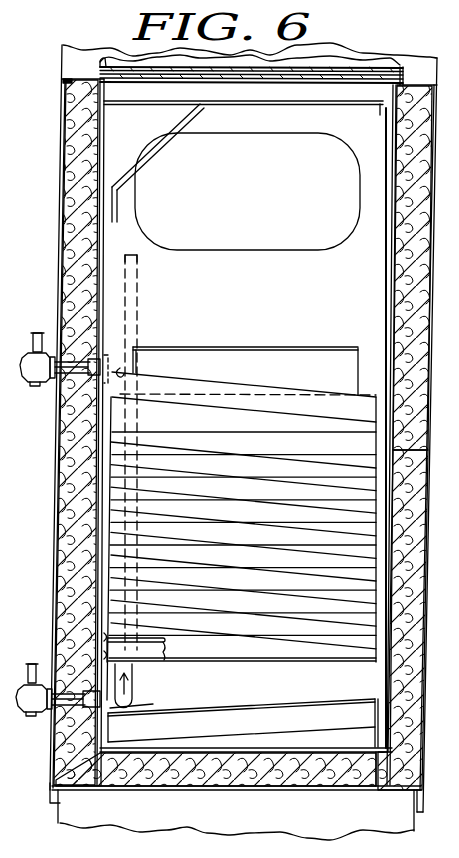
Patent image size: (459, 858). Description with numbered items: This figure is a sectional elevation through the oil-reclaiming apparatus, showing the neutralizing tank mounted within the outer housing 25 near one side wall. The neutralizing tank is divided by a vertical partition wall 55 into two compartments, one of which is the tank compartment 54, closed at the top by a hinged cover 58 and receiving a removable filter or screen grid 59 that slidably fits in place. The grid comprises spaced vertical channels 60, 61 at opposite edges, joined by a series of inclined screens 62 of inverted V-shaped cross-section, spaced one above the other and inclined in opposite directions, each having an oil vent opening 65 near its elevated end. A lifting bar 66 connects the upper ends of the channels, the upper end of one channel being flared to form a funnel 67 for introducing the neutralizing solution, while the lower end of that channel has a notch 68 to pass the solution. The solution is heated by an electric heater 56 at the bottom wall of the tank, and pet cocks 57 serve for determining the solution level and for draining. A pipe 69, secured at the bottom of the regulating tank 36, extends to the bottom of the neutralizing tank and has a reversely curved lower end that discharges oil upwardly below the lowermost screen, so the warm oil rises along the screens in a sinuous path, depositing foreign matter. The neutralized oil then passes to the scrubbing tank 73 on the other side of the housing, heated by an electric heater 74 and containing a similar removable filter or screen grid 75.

The outer housing 25 is at (62, 180).
The regulating tank 36 is at (380, 67).
The hinged cover 58 is at (99, 68).
The tank compartment 54 is at (100, 125).
The lifting bar 66 is at (337, 109).
The funnel 67 is at (147, 138).
The vertical partition wall 55 is at (257, 268).
The vertical channel 60 is at (105, 295).
The vertical channel 61 is at (385, 279).
The scrubbing tank 73 is at (423, 435).
The filter or screen grid 75 is at (418, 620).
The inclined screen 62 is at (246, 393).
The filter or screen grid 59 is at (337, 408).
The oil vent opening 65 is at (121, 372).
The pet cock 57 is at (37, 383).
The pipe 69 is at (133, 681).
The notch 68 is at (110, 716).
The electric heater 56 is at (350, 715).
The electric heater 74 is at (458, 850).